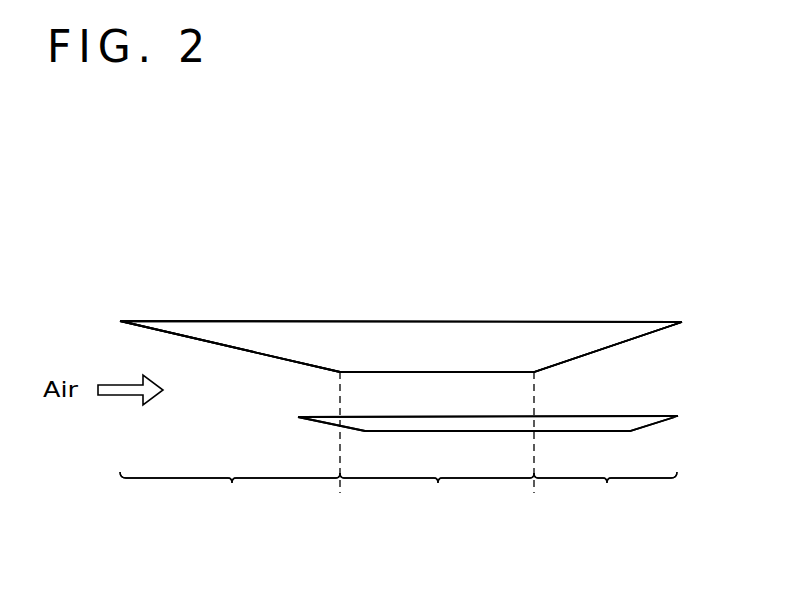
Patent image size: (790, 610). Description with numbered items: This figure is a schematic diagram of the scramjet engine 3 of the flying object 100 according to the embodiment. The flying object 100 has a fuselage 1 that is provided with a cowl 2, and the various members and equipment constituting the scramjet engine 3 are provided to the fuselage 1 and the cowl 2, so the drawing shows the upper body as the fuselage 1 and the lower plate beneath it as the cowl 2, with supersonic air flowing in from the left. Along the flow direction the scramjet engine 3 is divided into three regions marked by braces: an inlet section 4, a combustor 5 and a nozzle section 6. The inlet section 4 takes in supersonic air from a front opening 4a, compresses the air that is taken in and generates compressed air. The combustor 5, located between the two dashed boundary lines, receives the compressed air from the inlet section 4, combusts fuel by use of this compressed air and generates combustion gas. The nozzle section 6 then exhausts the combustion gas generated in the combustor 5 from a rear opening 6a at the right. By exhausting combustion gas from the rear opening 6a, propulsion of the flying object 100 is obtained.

The flying object 100 is at (536, 266).
The fuselage 1 is at (557, 328).
The cowl 2 is at (633, 423).
The scramjet engine 3 is at (372, 505).
The inlet section 4 is at (230, 497).
The front opening 4a is at (312, 395).
The combustor 5 is at (437, 498).
The nozzle section 6 is at (605, 497).
The rear opening 6a is at (670, 388).